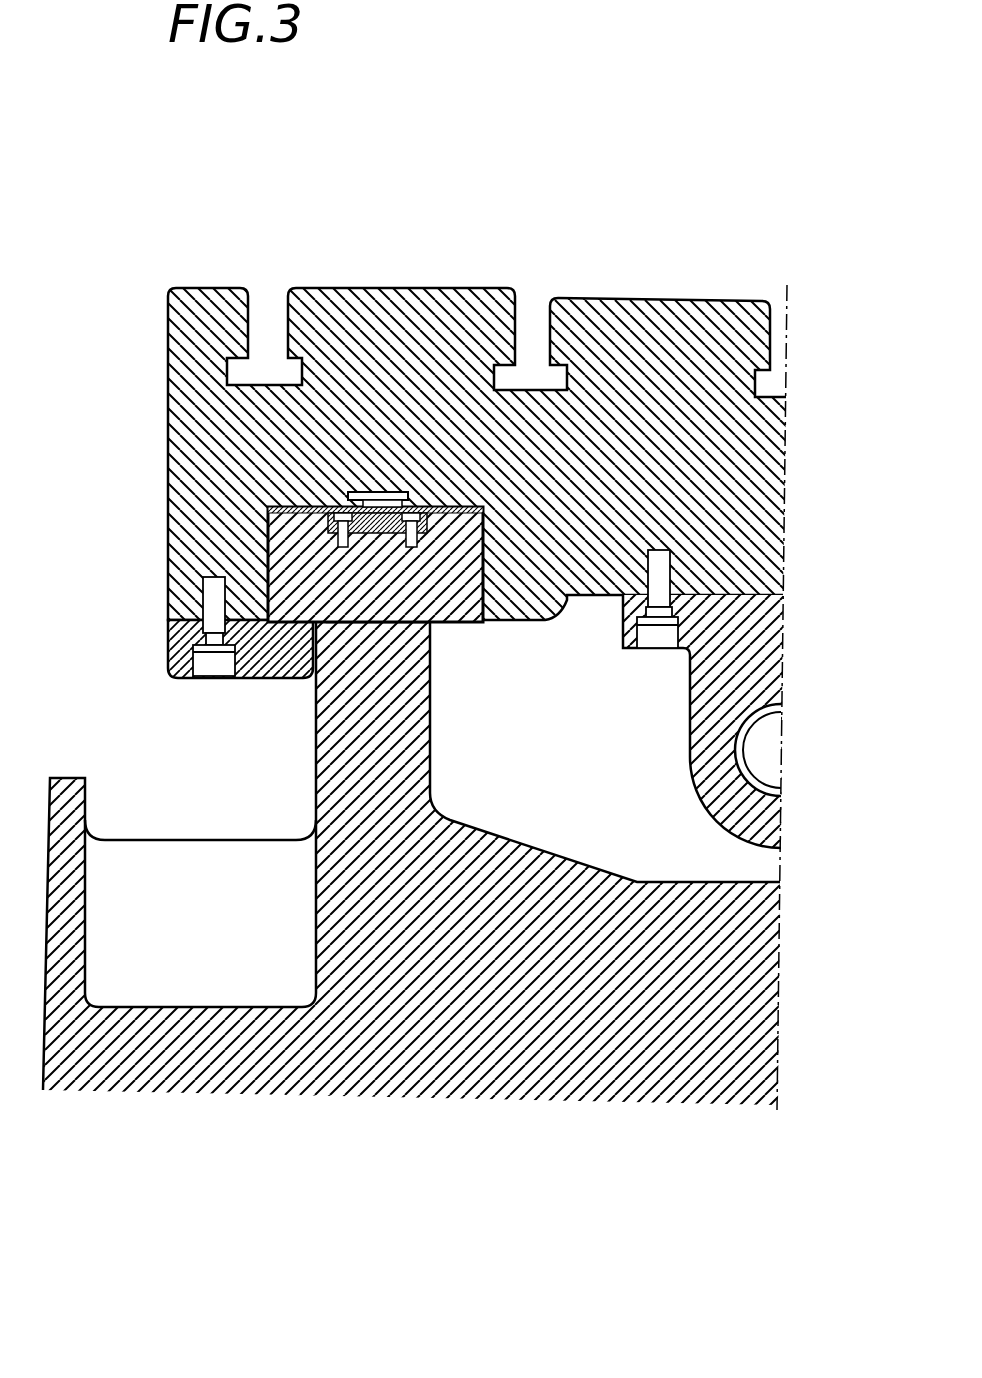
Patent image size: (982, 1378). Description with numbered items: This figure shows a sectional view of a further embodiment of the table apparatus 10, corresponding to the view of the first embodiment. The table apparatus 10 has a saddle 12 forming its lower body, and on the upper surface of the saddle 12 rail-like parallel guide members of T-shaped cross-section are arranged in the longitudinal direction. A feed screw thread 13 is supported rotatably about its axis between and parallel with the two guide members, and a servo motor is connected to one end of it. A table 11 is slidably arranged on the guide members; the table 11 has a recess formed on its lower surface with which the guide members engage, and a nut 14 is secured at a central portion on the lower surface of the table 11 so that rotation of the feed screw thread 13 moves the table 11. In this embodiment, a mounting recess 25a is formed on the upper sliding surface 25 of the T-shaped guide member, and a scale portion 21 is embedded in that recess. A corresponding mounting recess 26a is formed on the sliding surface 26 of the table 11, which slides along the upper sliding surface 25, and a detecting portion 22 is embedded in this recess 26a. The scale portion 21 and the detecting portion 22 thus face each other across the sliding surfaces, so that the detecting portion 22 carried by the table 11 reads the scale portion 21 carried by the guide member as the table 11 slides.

The table apparatus 10 is at (442, 679).
The table 11 is at (359, 337).
The saddle 12 is at (658, 982).
The feed screw thread 13 is at (752, 766).
The nut 14 is at (743, 653).
The scale portion 21 is at (318, 672).
The detecting portion 22 is at (372, 492).
The upper sliding surface 25 is at (412, 498).
The mounting recess 25a is at (316, 521).
The sliding surface 26 is at (346, 498).
The mounting recess 26a is at (396, 488).